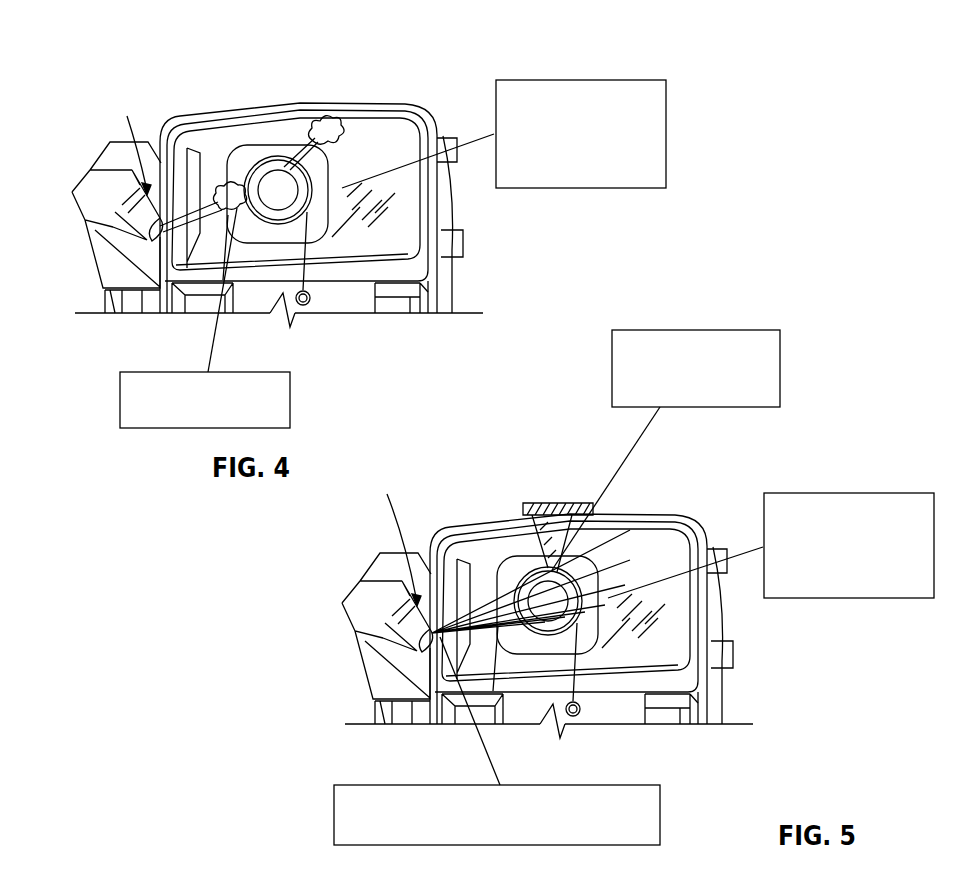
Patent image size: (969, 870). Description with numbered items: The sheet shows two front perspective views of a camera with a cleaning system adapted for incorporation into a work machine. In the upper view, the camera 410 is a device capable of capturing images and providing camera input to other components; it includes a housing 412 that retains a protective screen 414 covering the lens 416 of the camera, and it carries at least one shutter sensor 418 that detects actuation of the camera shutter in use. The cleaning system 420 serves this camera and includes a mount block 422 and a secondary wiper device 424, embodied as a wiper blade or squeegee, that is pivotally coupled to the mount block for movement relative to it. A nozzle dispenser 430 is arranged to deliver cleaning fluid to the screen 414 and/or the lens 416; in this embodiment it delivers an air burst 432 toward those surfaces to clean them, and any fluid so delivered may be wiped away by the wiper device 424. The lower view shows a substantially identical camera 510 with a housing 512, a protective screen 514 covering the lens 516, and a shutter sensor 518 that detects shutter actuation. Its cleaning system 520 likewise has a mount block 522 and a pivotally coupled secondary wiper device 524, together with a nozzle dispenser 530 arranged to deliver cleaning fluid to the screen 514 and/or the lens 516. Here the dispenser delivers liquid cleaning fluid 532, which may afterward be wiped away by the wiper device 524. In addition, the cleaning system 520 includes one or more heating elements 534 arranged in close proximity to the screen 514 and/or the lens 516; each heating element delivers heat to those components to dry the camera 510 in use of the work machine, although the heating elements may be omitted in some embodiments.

In FIG. 4, the camera 410 is at (368, 107).
In FIG. 4, the housing 412 is at (259, 112).
In FIG. 4, the protective screen 414 is at (204, 133).
In FIG. 4, the lens 416 is at (280, 163).
In FIG. 4, the shutter sensor 418 is at (560, 80).
In FIG. 4, the cleaning system 420 is at (129, 143).
In FIG. 4, the mount block 422 is at (332, 298).
In FIG. 4, the secondary wiper device 424 is at (285, 262).
In FIG. 4, the nozzle dispenser 430 is at (137, 223).
In FIG. 4, the air burst 432 is at (180, 372).
In FIG. 5, the camera 510 is at (648, 514).
In FIG. 5, the housing 512 is at (502, 522).
In FIG. 5, the protective screen 514 is at (467, 530).
In FIG. 5, the lens 516 is at (557, 568).
In FIG. 5, the shutter sensor 518 is at (835, 493).
In FIG. 5, the cleaning system 520 is at (394, 538).
In FIG. 5, the mount block 522 is at (602, 709).
In FIG. 5, the secondary wiper device 524 is at (555, 673).
In FIG. 5, the nozzle dispenser 530 is at (407, 634).
In FIG. 5, the liquid cleaning fluid 532 is at (405, 785).
In FIG. 5, the heating element 534 is at (678, 330).